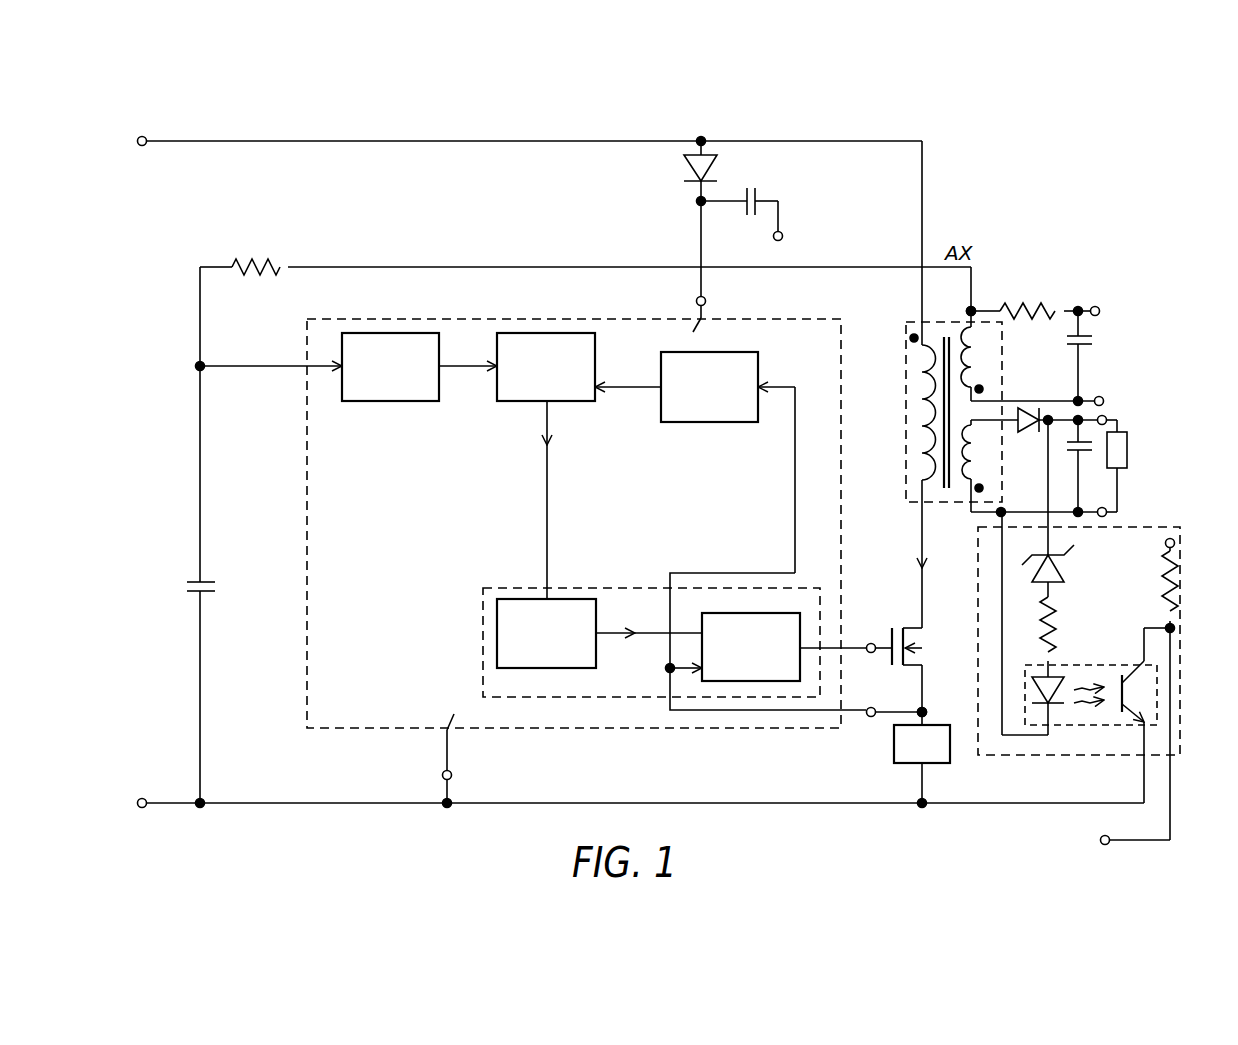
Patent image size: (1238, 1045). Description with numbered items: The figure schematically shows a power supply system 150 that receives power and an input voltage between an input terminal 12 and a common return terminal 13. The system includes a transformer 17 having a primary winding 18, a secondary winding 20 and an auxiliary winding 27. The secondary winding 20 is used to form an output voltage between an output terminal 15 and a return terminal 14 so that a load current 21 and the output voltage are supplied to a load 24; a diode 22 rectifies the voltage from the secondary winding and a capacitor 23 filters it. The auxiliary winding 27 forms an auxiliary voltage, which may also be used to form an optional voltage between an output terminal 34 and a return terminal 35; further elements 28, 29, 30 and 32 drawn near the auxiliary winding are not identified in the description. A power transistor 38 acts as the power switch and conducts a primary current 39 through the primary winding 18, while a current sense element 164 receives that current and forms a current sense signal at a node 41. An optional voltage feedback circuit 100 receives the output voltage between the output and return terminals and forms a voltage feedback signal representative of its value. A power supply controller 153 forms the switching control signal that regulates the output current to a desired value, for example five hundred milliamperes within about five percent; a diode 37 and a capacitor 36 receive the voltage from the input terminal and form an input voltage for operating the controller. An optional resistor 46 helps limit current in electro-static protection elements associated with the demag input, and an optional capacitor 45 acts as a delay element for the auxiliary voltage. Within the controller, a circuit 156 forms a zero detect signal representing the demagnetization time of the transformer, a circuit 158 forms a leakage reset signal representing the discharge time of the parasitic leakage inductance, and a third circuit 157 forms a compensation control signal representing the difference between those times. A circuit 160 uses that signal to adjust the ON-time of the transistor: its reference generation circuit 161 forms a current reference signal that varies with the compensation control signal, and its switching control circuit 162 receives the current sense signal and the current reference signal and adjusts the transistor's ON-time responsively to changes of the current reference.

The input terminal 12 is at (145, 137).
The common return terminal 13 is at (144, 799).
The optional resistor 46 is at (252, 262).
The optional capacitor 45 is at (184, 583).
The diode 37 is at (686, 162).
The capacitor 36 is at (754, 182).
The power supply controller 153 is at (561, 561).
The circuit 156 is at (371, 403).
The third circuit 157 is at (522, 403).
The circuit 158 is at (690, 424).
The reference generation circuit 160 is at (505, 589).
The reference generation circuit (Ref) 161 is at (584, 598).
The switching control circuit 162 is at (778, 612).
The transformer 17 is at (978, 413).
The primary winding 18 is at (921, 418).
The auxiliary winding 28 is at (974, 340).
The auxiliary winding 27 is at (971, 330).
The load current 21 is at (972, 430).
The secondary winding 20 is at (967, 493).
The auxiliary node 30 is at (973, 308).
The resistor 32 is at (1033, 323).
The capacitor 29 is at (1062, 341).
The output terminal 34 is at (1097, 306).
The return terminal 35 is at (1099, 396).
The diode 22 is at (1032, 432).
The capacitor 23 is at (1072, 452).
The output terminal 15 is at (1104, 416).
The load 24 is at (1131, 459).
The return terminal 14 is at (1105, 506).
The voltage feedback circuit 100 is at (1146, 525).
The primary current 39 is at (918, 572).
The power transistor 38 is at (917, 638).
The node 41 is at (926, 709).
The current sense element 164 is at (937, 766).
The power supply system 150 is at (838, 851).